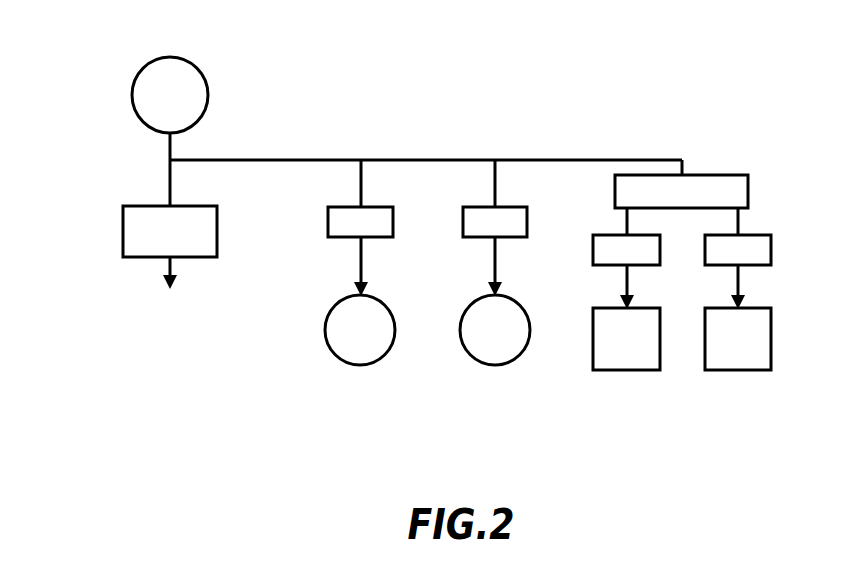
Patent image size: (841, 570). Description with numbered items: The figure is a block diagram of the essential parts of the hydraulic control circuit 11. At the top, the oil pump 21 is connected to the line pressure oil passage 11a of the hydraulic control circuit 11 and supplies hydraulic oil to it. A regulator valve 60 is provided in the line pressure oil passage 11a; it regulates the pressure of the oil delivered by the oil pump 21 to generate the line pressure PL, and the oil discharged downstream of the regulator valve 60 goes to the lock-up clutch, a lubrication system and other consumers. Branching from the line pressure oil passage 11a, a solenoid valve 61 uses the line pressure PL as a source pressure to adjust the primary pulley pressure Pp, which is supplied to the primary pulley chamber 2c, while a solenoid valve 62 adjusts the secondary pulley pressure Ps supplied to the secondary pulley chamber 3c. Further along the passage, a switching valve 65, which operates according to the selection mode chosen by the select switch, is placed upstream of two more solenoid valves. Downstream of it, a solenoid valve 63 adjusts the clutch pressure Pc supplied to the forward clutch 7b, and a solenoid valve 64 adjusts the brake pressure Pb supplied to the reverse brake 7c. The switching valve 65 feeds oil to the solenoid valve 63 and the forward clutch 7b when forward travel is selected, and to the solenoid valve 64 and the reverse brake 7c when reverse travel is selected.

The hydraulic control circuit 11 is at (687, 99).
The line pressure oil passage 11a is at (291, 160).
The oil pump 21 is at (201, 77).
The regulator valve 60 is at (130, 221).
The solenoid valve 61 is at (385, 230).
The solenoid valve 62 is at (520, 230).
The solenoid valve 63 is at (643, 259).
The solenoid valve 64 is at (757, 259).
The switching valve 65 is at (740, 190).
The primary pulley chamber 2c is at (370, 357).
The secondary pulley chamber 3c is at (505, 357).
The forward clutch 7b is at (640, 363).
The reverse brake 7c is at (753, 363).